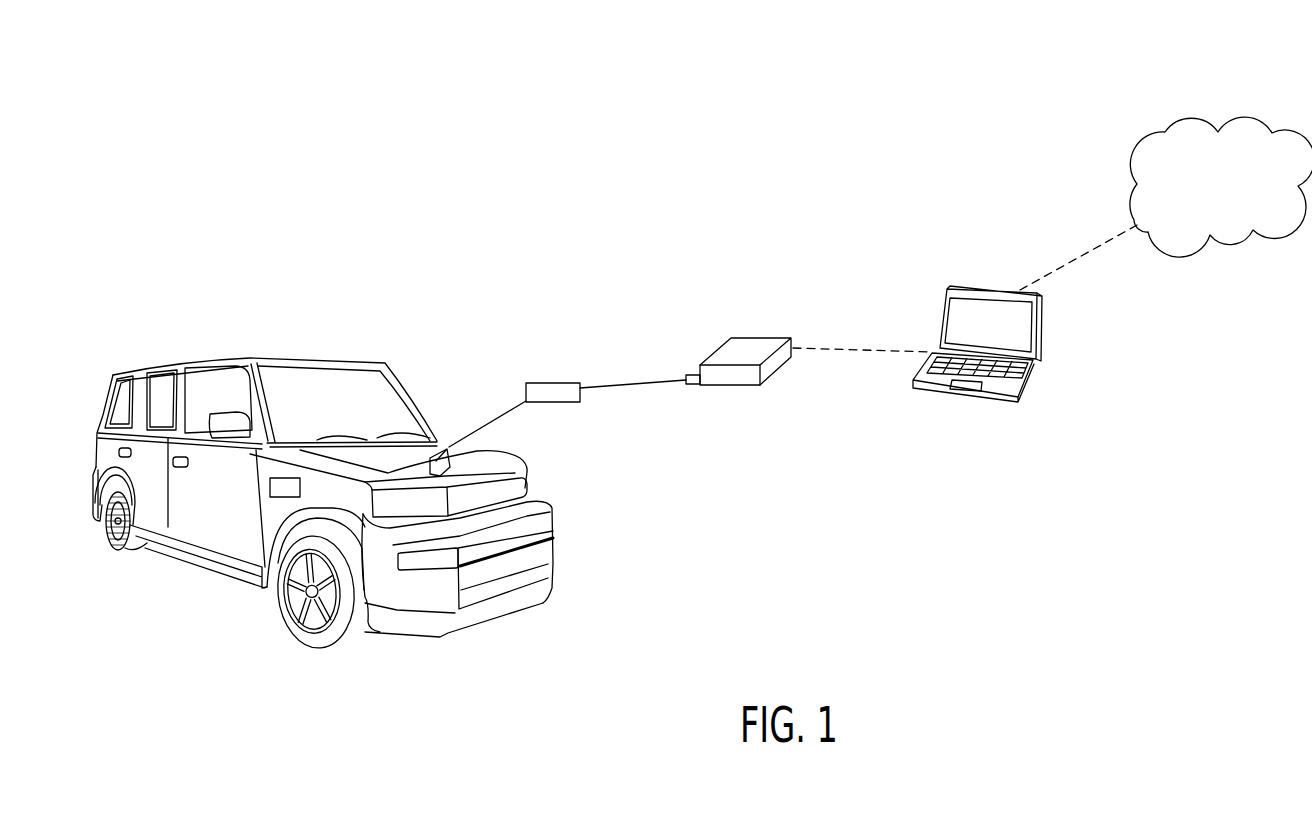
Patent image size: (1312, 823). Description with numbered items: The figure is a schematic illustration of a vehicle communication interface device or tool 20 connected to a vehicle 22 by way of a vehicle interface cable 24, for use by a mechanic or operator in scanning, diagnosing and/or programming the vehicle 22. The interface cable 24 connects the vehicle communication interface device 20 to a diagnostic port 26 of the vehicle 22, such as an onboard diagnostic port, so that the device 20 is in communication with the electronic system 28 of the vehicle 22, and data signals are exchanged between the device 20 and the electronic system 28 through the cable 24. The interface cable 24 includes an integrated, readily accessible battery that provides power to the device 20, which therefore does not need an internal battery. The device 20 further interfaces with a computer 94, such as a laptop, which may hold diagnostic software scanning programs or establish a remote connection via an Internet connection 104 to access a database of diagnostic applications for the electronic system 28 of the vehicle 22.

The vehicle communication interface device 20 is at (753, 335).
The vehicle 22 is at (277, 353).
The vehicle interface cable 24 is at (593, 385).
The diagnostic port 26 is at (434, 453).
The electronic system 28 is at (266, 493).
The computer 94 is at (958, 285).
The Internet connection 104 is at (1183, 112).